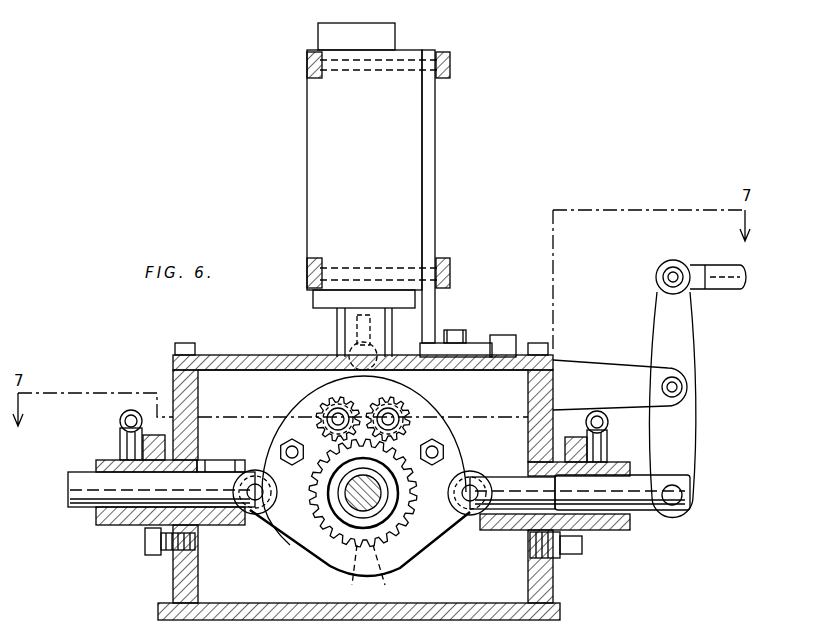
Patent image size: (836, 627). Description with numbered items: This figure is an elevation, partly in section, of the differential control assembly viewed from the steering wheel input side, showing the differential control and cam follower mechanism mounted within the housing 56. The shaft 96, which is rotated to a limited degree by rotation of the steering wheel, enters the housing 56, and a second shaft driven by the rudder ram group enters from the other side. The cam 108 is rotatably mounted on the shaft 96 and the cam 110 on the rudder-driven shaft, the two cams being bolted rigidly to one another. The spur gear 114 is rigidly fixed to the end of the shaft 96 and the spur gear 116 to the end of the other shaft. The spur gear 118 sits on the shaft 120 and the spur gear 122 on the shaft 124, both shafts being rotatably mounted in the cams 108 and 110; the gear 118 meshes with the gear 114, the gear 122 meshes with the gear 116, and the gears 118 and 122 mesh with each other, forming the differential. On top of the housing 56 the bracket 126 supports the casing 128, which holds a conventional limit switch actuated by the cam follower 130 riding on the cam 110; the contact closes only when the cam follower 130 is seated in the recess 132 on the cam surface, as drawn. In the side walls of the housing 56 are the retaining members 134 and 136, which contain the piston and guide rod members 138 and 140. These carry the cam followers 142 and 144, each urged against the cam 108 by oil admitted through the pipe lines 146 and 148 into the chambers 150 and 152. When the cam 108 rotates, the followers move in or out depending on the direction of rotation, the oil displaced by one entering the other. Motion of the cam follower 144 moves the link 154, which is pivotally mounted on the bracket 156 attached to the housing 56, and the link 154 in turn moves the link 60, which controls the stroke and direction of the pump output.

The housing 56 is at (172, 380).
The link 60 is at (725, 268).
The shaft 96 is at (345, 515).
The cam 108 is at (332, 568).
The cam 110 is at (280, 530).
The spur gear 114 is at (390, 560).
The spur gear 116 is at (362, 572).
The spur gear 118 is at (330, 410).
The shaft 120 is at (322, 424).
The spur gear 122 is at (405, 410).
The shaft 124 is at (405, 423).
The bracket 126 is at (428, 172).
The casing 128 is at (372, 170).
The cam follower 130 is at (348, 362).
The recess 132 is at (340, 372).
The retaining member 134 is at (112, 524).
The retaining member 136 is at (625, 531).
The piston and guide rod member 138 is at (75, 495).
The piston and guide rod member 140 is at (660, 512).
The cam follower 142 is at (258, 470).
The cam follower 144 is at (468, 470).
The pipe line 146 is at (120, 421).
The pipe line 148 is at (604, 425).
The chamber 150 is at (150, 540).
The chamber 152 is at (588, 533).
The link 154 is at (690, 428).
The bracket 156 is at (622, 368).